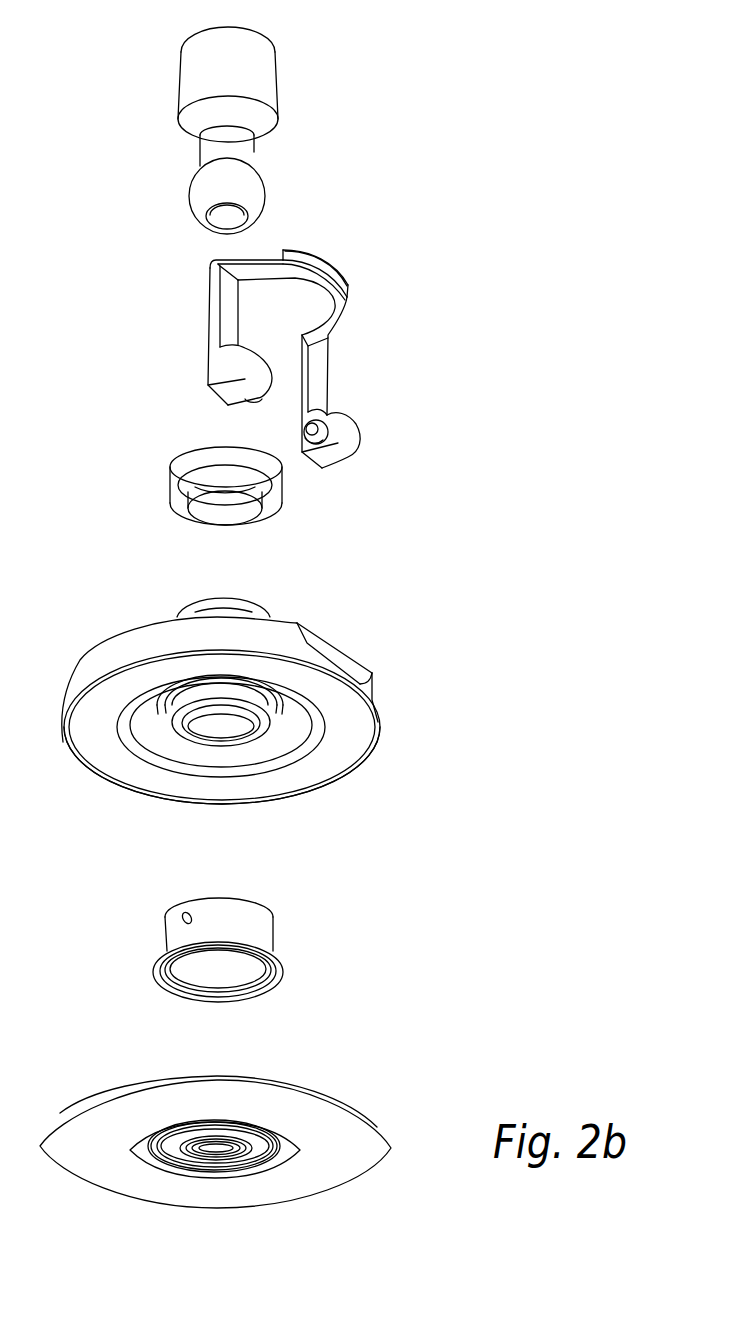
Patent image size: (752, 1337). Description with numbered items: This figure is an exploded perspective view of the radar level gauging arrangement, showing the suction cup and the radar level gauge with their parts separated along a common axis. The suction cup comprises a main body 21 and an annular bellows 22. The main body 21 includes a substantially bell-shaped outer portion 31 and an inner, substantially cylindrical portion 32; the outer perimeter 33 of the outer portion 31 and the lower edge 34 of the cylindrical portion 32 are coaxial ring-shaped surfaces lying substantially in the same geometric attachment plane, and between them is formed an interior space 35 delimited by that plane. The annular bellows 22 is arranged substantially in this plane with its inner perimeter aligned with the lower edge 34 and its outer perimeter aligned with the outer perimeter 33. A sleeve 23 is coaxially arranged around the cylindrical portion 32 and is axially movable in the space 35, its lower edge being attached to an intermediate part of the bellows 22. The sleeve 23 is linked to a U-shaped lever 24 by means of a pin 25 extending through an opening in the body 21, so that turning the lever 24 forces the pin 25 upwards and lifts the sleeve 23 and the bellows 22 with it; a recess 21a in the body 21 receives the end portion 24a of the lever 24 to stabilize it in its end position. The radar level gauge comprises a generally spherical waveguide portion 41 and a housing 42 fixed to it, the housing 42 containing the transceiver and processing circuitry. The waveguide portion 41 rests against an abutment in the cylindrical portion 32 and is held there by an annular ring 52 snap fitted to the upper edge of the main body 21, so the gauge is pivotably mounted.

The housing 42 is at (265, 92).
The waveguide portion 41 is at (257, 205).
The lever 24 is at (253, 265).
The end portion of the lever 24a is at (349, 289).
The pin 25 is at (320, 437).
The annular ring 52 is at (181, 471).
The main body 21 is at (370, 698).
The recess 21a is at (331, 665).
The outer perimeter 33 is at (382, 737).
The outer portion 31 is at (340, 750).
The interior space 35 is at (150, 723).
The lower edge 34 is at (196, 708).
The cylindrical portion 32 is at (258, 705).
The sleeve 23 is at (262, 933).
The annular bellows 22 is at (332, 1098).